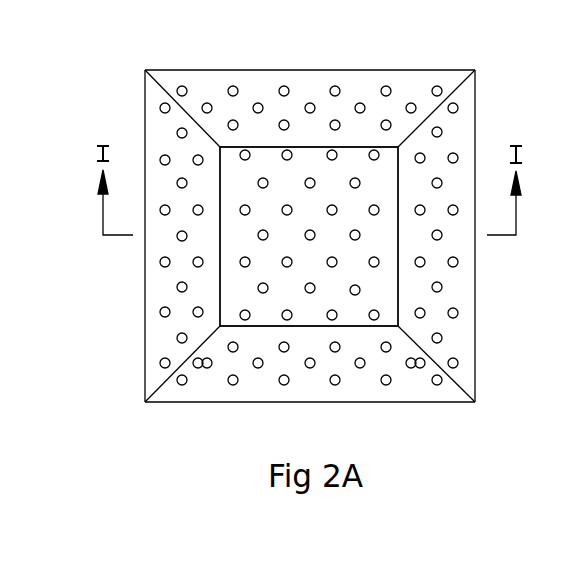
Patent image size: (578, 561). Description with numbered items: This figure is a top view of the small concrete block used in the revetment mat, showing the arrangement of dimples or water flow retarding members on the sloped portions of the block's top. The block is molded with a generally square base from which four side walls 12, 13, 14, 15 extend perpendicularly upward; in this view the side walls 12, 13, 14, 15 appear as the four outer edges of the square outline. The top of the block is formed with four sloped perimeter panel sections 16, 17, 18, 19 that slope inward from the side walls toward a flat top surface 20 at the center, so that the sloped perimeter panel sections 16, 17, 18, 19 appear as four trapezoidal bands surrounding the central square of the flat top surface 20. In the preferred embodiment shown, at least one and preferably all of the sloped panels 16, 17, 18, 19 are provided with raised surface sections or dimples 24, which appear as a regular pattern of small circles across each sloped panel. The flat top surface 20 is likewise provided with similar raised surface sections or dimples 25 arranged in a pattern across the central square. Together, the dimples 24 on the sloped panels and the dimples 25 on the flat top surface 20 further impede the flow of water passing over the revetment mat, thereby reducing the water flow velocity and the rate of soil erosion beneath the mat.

The side wall 12 is at (476, 135).
The side wall 13 is at (393, 403).
The side wall 14 is at (143, 132).
The side wall 15 is at (289, 70).
The sloped perimeter panel section 16 is at (312, 78).
The sloped perimeter panel section 17 is at (460, 243).
The sloped perimeter panel section 18 is at (309, 387).
The sloped perimeter panel section 19 is at (160, 292).
The flat top surface 20 is at (305, 268).
The raised surface section or dimple 24 is at (387, 86).
The raised surface section or dimple 25 is at (360, 290).